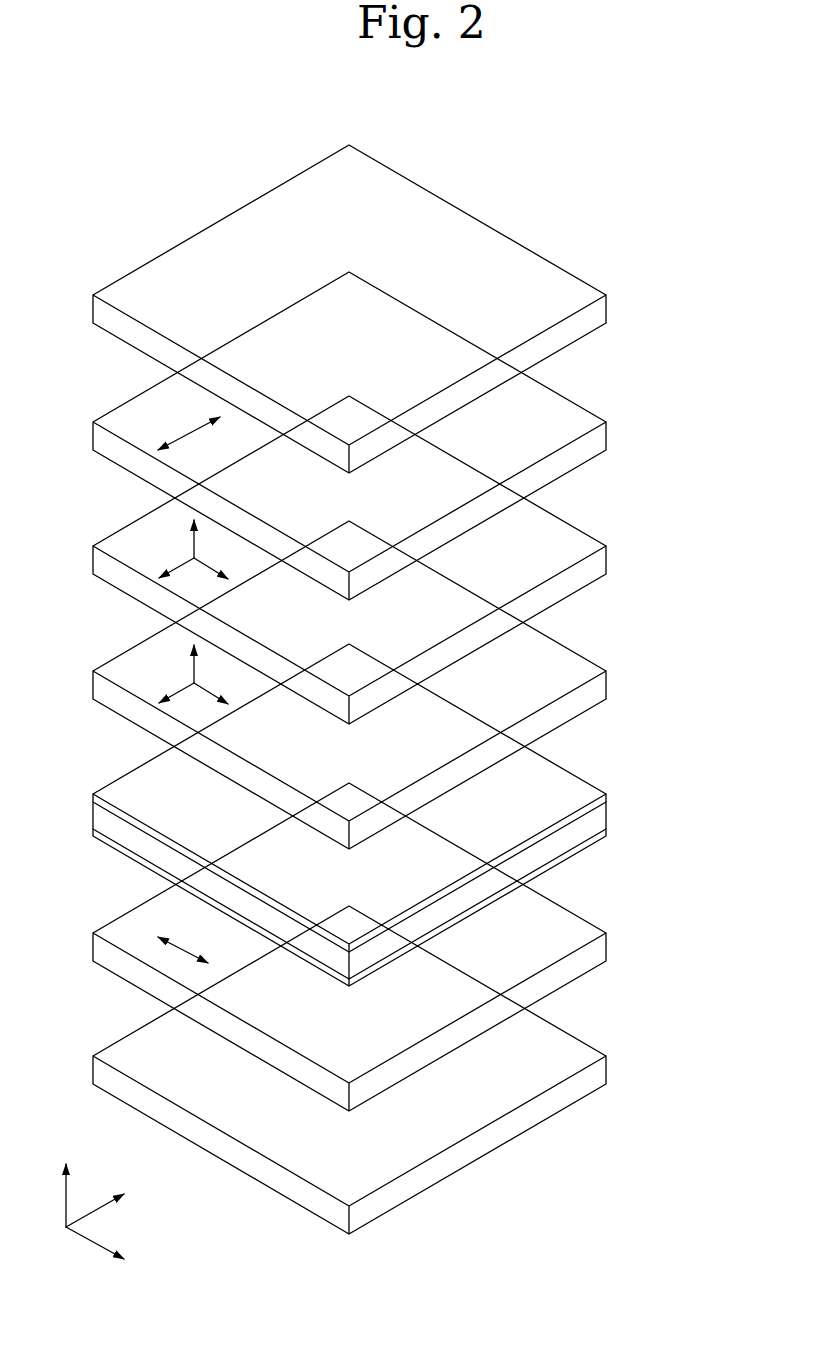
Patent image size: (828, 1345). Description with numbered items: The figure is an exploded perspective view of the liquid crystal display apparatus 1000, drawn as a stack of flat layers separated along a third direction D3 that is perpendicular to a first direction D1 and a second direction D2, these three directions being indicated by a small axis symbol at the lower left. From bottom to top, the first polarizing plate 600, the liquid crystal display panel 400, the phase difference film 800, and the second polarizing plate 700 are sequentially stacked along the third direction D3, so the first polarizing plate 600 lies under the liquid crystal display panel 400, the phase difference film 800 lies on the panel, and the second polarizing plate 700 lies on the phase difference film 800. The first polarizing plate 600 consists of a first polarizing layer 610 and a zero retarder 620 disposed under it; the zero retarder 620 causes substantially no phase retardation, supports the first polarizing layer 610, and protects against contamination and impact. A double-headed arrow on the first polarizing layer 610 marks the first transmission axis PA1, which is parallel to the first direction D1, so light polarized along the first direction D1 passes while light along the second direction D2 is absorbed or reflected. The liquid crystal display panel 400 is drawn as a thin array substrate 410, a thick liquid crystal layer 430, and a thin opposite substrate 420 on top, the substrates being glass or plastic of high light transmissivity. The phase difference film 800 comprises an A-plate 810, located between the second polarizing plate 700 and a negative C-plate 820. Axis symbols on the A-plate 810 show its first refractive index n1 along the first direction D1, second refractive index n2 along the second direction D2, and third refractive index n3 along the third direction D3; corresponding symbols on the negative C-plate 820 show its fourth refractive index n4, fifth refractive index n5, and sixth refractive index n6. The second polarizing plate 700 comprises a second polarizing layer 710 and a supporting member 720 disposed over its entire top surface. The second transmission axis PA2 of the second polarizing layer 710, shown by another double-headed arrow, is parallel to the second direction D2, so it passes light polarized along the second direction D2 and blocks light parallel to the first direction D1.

The liquid crystal display apparatus 1000 is at (568, 136).
The second polarizing plate 700 is at (684, 305).
The supporting member 720 is at (592, 316).
The second polarizing layer 710 is at (592, 441).
The phase difference film 800 is at (684, 556).
The A-plate 810 is at (592, 566).
The negative C-plate 820 is at (592, 692).
The liquid crystal display panel 400 is at (684, 781).
The opposite substrate 420 is at (598, 803).
The liquid crystal layer 430 is at (592, 826).
The array substrate 410 is at (603, 838).
The first polarizing plate 600 is at (684, 943).
The first polarizing layer 610 is at (592, 952).
The zero retarder 620 is at (592, 1077).
The second transmission axis PA2 is at (187, 430).
The first transmission axis PA1 is at (183, 950).
The first refractive index n1 is at (226, 576).
The second refractive index n2 is at (168, 563).
The third refractive index n3 is at (179, 534).
The fourth refractive index n4 is at (226, 701).
The fifth refractive index n5 is at (168, 688).
The sixth refractive index n6 is at (179, 659).
The first direction D1 is at (110, 1249).
The second direction D2 is at (110, 1205).
The third direction D3 is at (67, 1180).